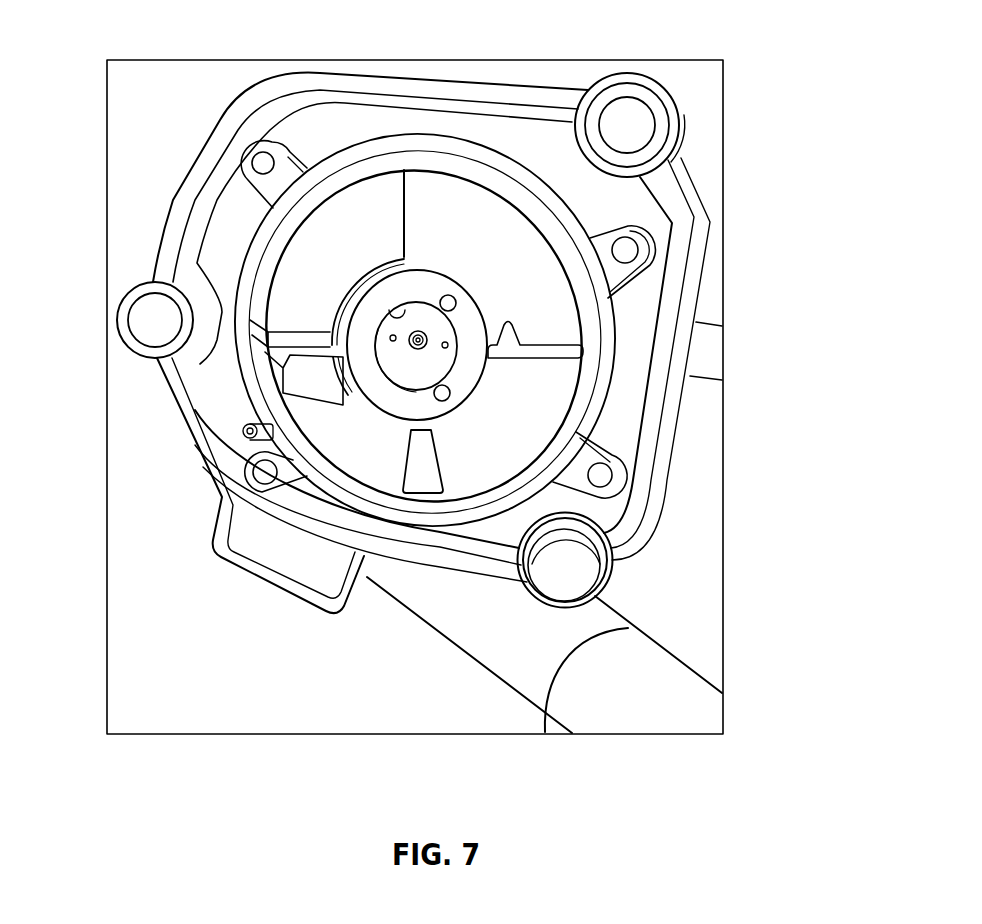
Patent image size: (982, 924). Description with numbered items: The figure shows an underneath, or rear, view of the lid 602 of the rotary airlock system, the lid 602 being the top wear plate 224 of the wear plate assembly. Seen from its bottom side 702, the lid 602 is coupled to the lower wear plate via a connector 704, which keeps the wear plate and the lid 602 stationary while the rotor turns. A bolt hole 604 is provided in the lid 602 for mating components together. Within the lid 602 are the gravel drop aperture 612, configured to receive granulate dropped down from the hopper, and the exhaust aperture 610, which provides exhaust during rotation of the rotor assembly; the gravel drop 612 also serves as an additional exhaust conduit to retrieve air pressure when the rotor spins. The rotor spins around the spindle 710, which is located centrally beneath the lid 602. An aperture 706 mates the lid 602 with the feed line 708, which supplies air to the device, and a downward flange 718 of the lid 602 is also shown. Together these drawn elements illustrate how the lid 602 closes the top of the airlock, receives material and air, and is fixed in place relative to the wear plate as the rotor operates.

The lid 602 is at (674, 172).
The bolt hole 604 is at (621, 114).
The bottom side 702 is at (642, 213).
The top wear plate 224 is at (592, 335).
The feed line 708 is at (714, 347).
The spindle 710 is at (443, 359).
The aperture 706 is at (487, 360).
The connector 704 is at (600, 475).
The gravel drop aperture 612 is at (313, 263).
The downward flange 718 is at (272, 344).
The exhaust aperture 610 is at (423, 480).